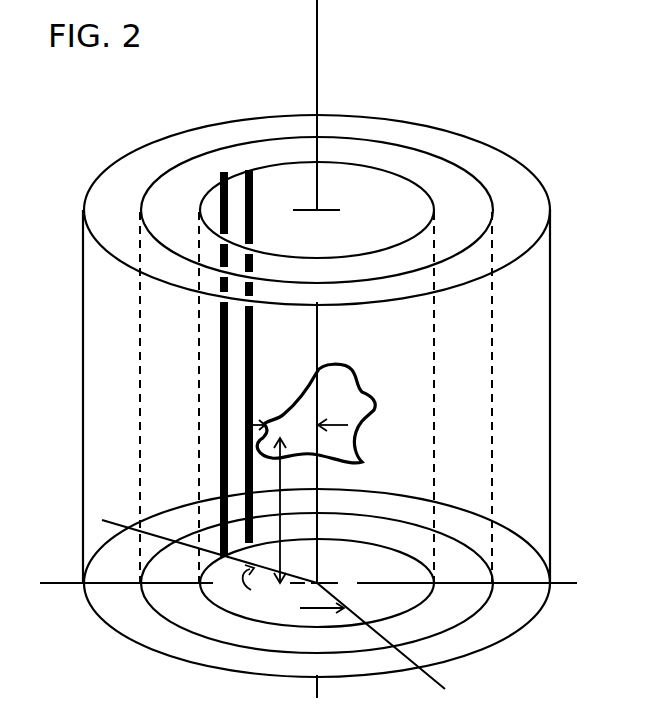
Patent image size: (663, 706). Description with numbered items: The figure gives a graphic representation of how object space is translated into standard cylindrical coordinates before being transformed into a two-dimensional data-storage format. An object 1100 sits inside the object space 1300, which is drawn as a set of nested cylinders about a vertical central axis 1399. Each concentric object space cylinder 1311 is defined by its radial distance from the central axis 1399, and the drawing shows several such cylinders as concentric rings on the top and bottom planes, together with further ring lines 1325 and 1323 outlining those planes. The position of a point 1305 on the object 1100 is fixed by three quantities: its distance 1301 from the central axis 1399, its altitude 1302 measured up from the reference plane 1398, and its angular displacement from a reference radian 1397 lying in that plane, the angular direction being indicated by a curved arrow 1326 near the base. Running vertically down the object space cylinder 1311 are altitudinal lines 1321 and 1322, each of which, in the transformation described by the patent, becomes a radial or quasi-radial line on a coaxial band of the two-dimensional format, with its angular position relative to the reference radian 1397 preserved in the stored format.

The object space 1300 is at (558, 275).
The concentric object space cylinder 1311 is at (398, 160).
The inner ring of top plane 1325 is at (233, 167).
The altitudinal line 1321 is at (208, 182).
The second vertical line 1322 is at (208, 184).
The bottom plane rings 1323 is at (185, 555).
The central axis 1399 is at (328, 91).
The reference plane 1398 is at (590, 567).
The reference radian 1397 is at (309, 604).
The object 1100 is at (392, 397).
The distance 1301 is at (373, 435).
The point 1305 is at (282, 397).
The altitude 1302 is at (288, 510).
The angular direction arrow 1326 is at (286, 589).